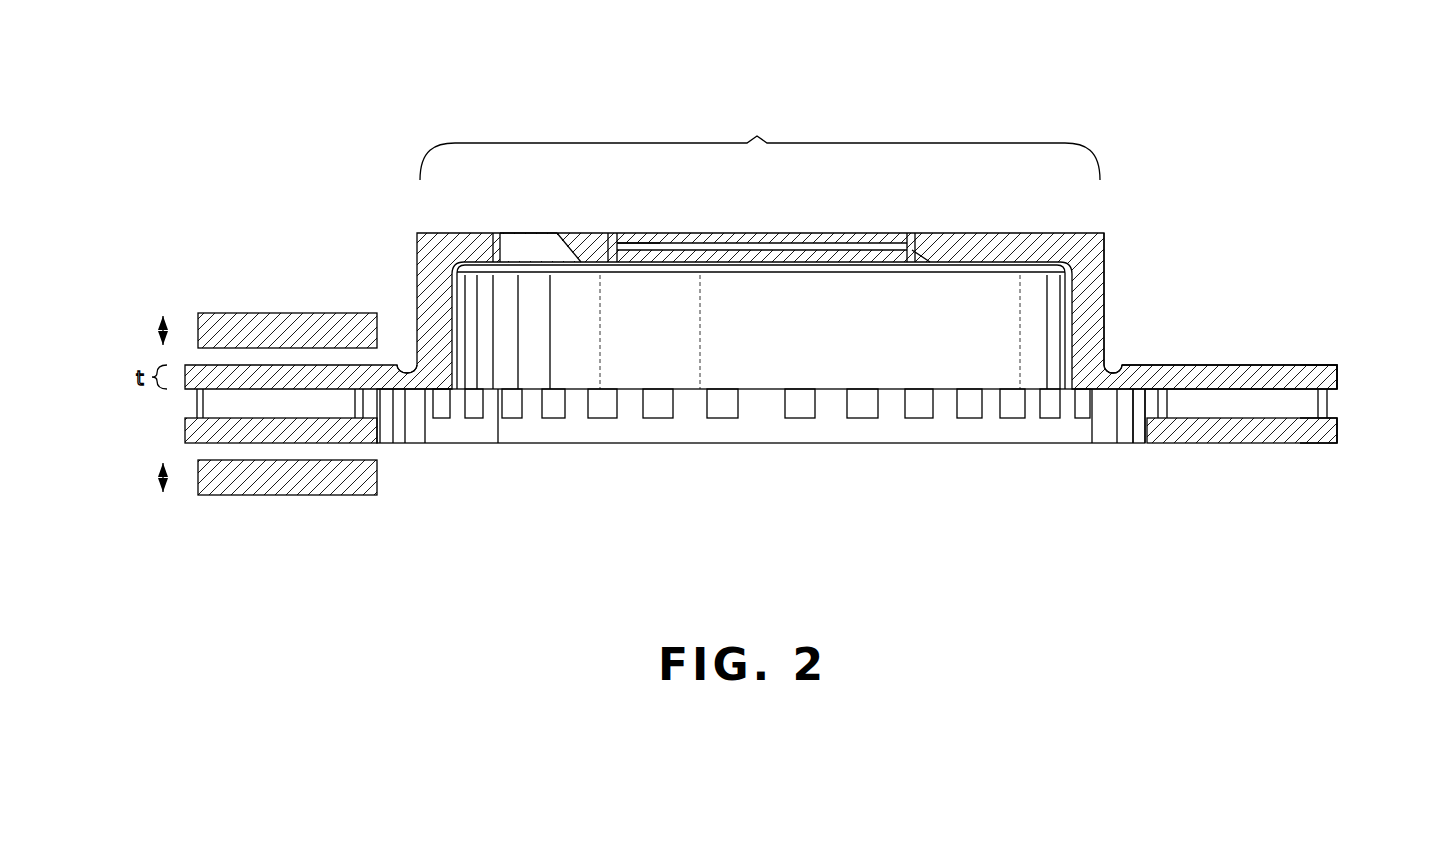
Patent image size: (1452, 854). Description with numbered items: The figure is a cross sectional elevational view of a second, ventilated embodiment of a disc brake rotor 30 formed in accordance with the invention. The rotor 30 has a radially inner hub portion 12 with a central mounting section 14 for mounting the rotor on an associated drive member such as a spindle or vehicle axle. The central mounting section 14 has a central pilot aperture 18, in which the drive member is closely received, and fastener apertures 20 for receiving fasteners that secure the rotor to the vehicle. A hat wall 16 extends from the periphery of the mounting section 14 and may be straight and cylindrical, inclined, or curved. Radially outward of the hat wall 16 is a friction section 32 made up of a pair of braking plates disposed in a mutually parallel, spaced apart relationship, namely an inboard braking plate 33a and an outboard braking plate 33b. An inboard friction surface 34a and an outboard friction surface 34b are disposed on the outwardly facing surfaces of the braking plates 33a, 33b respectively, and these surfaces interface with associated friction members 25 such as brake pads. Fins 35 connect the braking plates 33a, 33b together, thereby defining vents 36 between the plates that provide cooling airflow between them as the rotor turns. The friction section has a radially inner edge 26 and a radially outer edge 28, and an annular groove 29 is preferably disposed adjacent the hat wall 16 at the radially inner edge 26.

The radially inner hub portion 12 is at (406, 206).
The central mounting section 14 is at (961, 263).
The hat wall 16 is at (1104, 277).
The central pilot aperture 18 is at (617, 238).
The fastener apertures 20 is at (550, 238).
The friction members 25 is at (258, 325).
The radially inner edge 26 is at (1118, 364).
The radially outer edge 28 is at (1337, 365).
The annular groove 29 is at (405, 363).
The rotor 30 is at (975, 120).
The friction section 32 is at (1286, 368).
The inboard braking plate 33a is at (1337, 430).
The outboard braking plate 33b is at (1340, 378).
The inboard friction surface 34a is at (1248, 444).
The outboard friction surface 34b is at (1218, 365).
The fins 35 is at (195, 404).
The vents 36 is at (863, 412).